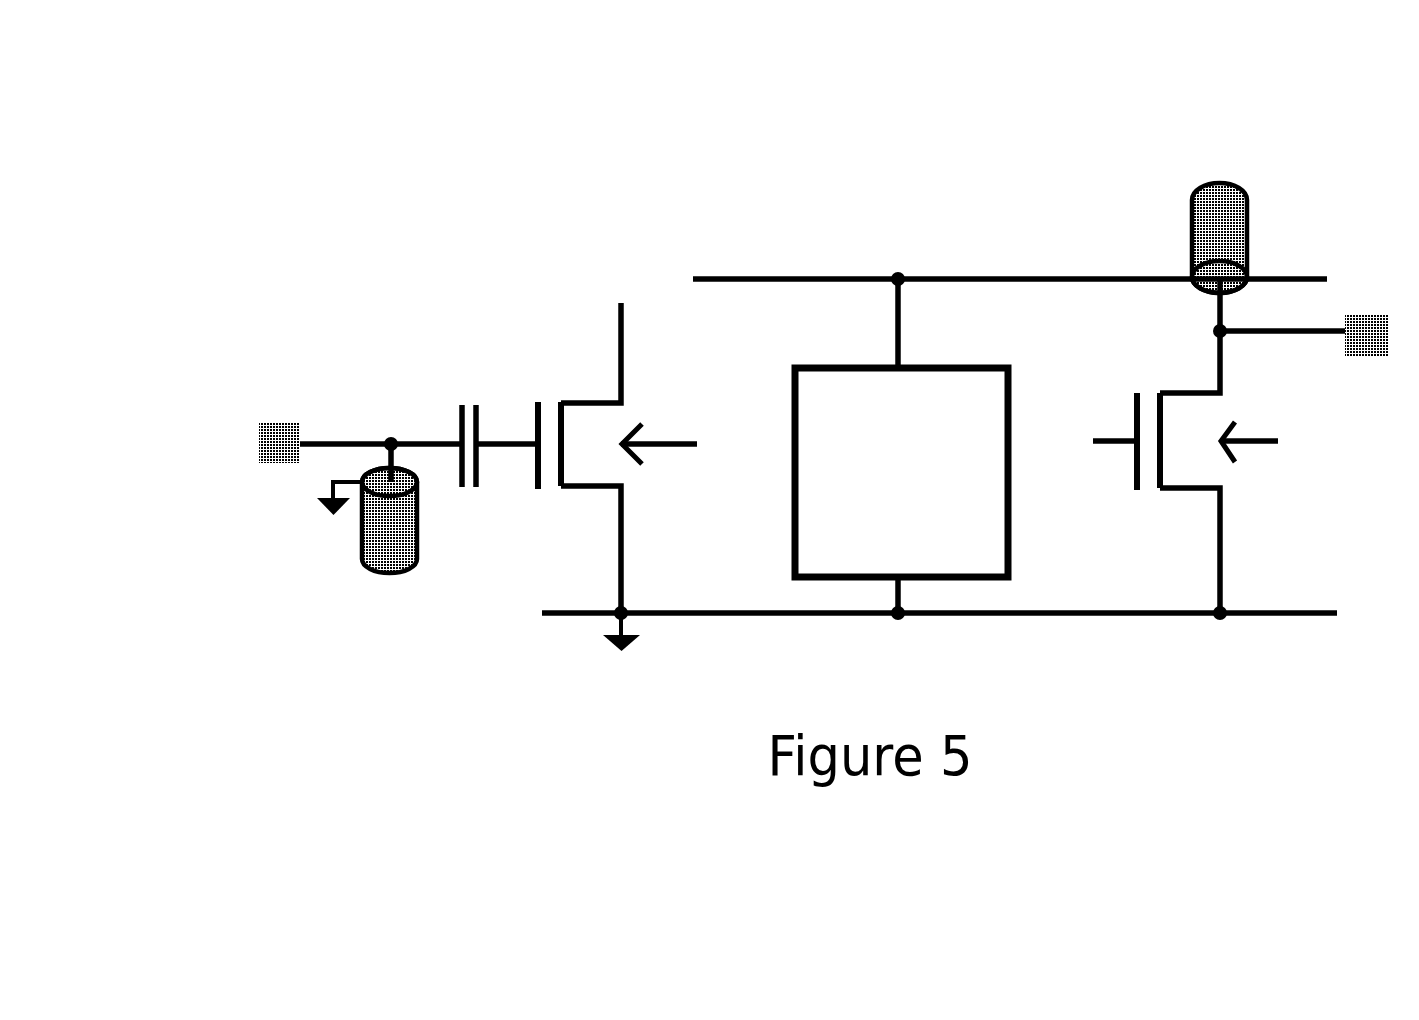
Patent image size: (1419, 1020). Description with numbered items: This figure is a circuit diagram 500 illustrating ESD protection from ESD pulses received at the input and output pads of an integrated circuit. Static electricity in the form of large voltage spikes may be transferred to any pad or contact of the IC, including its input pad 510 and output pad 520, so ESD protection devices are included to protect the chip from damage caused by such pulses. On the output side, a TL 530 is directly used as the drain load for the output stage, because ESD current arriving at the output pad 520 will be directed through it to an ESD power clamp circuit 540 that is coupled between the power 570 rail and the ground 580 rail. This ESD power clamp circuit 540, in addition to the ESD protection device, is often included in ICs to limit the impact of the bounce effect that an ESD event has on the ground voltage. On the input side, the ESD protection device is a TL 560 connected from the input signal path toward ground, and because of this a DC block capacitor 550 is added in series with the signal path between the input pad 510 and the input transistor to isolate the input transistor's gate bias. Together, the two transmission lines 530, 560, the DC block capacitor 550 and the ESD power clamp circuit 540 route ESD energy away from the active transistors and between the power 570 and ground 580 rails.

The circuit diagram 500 is at (199, 137).
The input pad 510 is at (282, 424).
The output pad 520 is at (1364, 313).
The TL 530 is at (1198, 188).
The ESD power clamp circuit 540 is at (790, 398).
The DC block capacitor 550 is at (440, 369).
The TL 560 is at (388, 575).
The power rail 570 is at (1010, 297).
The ground rail 580 is at (939, 644).